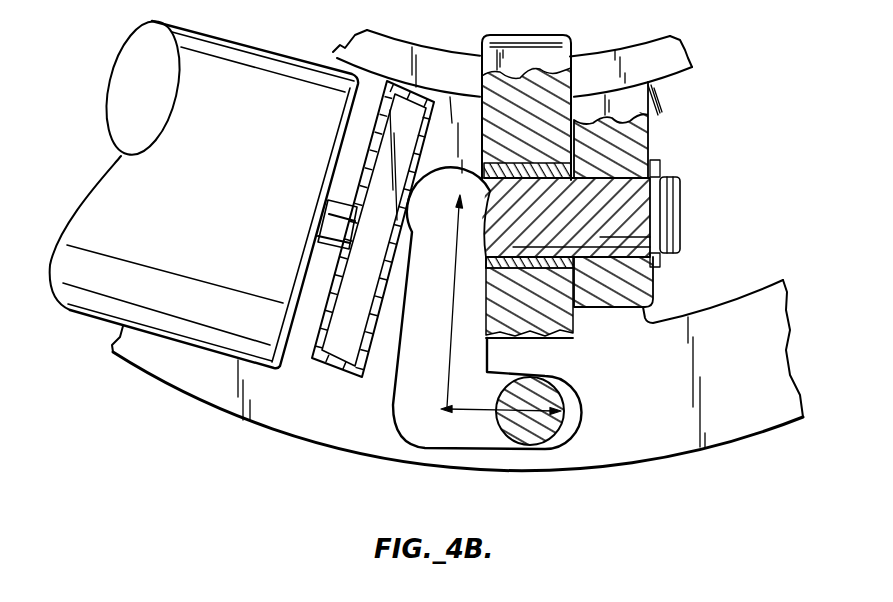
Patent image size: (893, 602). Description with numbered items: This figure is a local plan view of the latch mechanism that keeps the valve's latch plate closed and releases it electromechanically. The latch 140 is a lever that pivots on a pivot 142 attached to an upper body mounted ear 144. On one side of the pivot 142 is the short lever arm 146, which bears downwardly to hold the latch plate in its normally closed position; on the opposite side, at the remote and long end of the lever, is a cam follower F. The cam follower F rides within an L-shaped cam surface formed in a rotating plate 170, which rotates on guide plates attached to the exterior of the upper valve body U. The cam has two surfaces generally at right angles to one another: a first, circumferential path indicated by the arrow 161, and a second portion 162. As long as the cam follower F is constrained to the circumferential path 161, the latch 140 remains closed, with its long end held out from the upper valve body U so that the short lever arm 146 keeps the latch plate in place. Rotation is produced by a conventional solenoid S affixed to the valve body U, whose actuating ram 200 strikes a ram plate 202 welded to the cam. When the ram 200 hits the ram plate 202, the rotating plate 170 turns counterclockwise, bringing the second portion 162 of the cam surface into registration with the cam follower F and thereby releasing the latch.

The solenoid S is at (211, 174).
The upper valve body U is at (400, 34).
The short lever arm 146 is at (532, 40).
The latch 140 is at (527, 137).
The upper body mounted ear 144 is at (623, 143).
The pivot 142 is at (600, 211).
The actuating ram 200 is at (340, 212).
The ram plate 202 is at (340, 347).
The rotating plate 170 is at (277, 398).
The second portion of cam surface 162 is at (440, 380).
The circumferential cam surface path 161 is at (471, 412).
The cam follower F is at (540, 442).